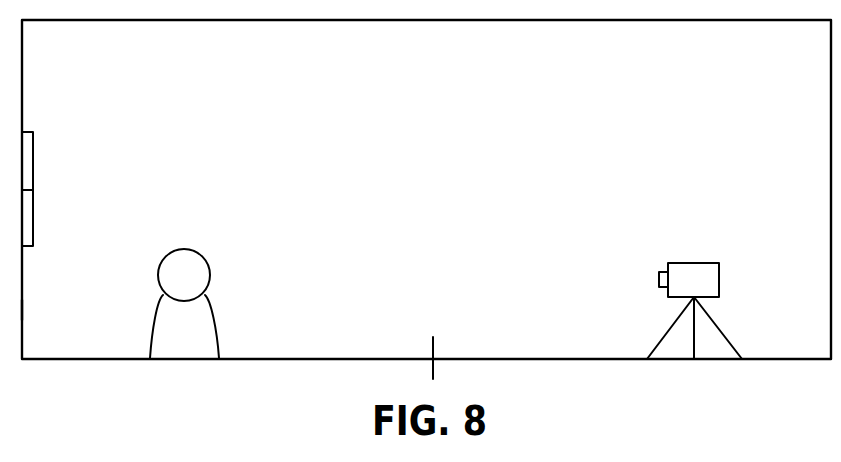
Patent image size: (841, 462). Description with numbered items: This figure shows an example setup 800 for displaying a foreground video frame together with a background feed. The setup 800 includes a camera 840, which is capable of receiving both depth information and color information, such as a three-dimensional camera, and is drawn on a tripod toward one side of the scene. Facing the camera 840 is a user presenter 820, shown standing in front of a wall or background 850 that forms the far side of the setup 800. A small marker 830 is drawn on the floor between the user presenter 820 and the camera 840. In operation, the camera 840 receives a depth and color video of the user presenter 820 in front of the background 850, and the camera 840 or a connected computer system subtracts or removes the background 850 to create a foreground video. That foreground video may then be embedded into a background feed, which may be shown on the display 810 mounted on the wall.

The setup 800 is at (426, 189).
The display 810 is at (22, 133).
The user presenter 820 is at (188, 268).
The floor marker 830 is at (435, 350).
The camera 840 is at (701, 276).
The wall or background 850 is at (22, 318).